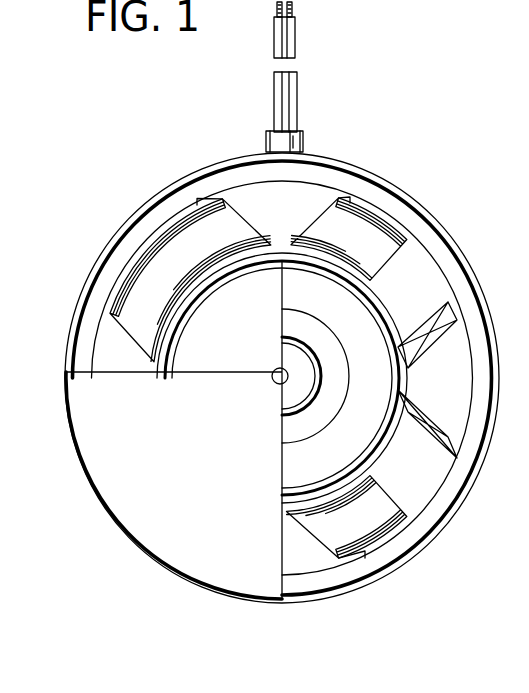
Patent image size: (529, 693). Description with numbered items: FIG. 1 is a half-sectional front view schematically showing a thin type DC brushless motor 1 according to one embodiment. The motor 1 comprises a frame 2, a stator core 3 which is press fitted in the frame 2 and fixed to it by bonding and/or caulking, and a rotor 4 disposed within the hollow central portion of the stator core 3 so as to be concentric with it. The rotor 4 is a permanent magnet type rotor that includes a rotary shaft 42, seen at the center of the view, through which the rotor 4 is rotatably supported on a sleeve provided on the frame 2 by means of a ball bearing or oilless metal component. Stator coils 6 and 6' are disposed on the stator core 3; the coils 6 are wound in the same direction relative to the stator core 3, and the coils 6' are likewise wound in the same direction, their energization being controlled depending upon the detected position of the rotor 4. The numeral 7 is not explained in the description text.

The thin type DC brushless motor 1 is at (370, 99).
The frame 2 is at (425, 232).
The stator core 3 is at (165, 218).
The rotor 4 is at (213, 353).
The stator coil 6 is at (277, 428).
The stator coil 6' is at (375, 205).
The rotor 7 is at (528, 591).
The rotary shaft 42 is at (273, 381).